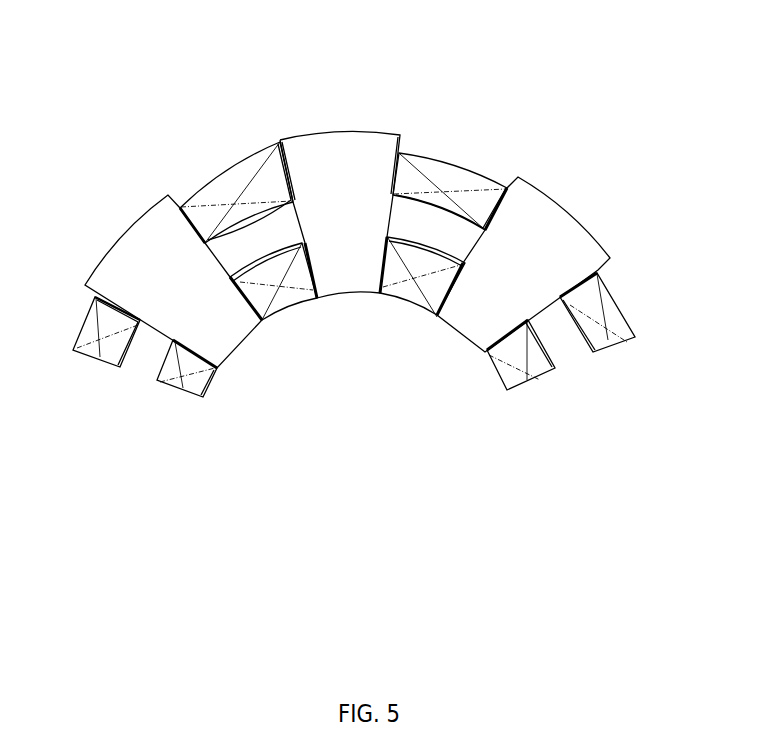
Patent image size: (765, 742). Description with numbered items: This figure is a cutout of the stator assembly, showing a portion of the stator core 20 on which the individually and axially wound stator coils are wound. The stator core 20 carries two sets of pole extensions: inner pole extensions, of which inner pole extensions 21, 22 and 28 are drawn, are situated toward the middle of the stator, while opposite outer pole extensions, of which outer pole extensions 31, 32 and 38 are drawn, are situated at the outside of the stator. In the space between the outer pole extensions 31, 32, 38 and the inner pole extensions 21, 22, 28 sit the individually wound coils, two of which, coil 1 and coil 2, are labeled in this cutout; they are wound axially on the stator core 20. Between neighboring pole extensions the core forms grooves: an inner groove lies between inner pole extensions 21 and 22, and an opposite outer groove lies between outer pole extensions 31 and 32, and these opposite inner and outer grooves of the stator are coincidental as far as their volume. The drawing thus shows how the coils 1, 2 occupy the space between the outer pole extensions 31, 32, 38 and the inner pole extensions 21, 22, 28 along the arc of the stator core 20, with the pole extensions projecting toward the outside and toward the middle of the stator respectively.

The individual axially wound stator coil 1 is at (227, 187).
The individual axially wound stator coil 2 is at (450, 183).
The stator core 20 is at (560, 337).
The inner stator pole extension 21 is at (343, 276).
The inner stator pole extension 22 is at (468, 317).
The inner stator pole extension 28 is at (232, 343).
The outer stator pole extension 31 is at (337, 170).
The outer stator pole extension 32 is at (548, 240).
The outer stator pole extension 38 is at (137, 248).